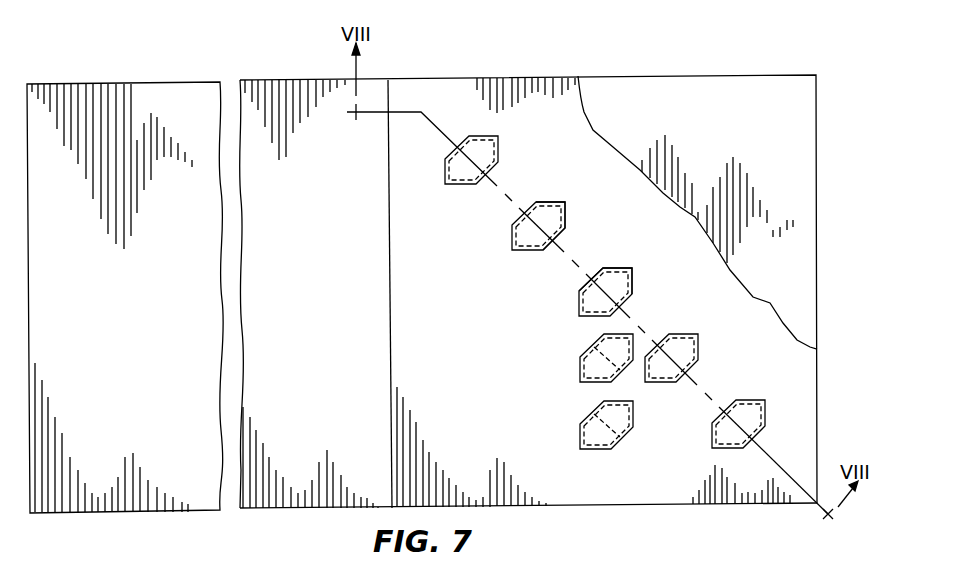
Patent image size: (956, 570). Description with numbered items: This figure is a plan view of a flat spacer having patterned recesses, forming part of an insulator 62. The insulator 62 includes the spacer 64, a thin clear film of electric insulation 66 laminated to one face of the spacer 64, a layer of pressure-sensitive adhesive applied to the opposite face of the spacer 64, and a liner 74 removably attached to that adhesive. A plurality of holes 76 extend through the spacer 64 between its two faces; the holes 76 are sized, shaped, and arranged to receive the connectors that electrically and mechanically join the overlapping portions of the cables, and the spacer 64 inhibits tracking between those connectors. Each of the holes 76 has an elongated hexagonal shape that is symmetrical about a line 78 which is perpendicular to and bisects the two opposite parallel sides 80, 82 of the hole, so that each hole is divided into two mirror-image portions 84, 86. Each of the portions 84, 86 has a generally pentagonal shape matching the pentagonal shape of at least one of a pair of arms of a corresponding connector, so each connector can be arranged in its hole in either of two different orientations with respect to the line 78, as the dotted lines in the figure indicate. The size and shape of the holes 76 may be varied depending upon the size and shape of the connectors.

The insulator 62 is at (494, 76).
The spacer 64 is at (683, 490).
The film of electric insulation 66 is at (735, 134).
The liner 74 is at (98, 511).
The holes 76 is at (498, 150).
The line 78 is at (441, 129).
The parallel side 80 is at (512, 228).
The parallel side 82 is at (566, 230).
The mirror-image portion 84 is at (590, 298).
The mirror-image portion 86 is at (620, 281).